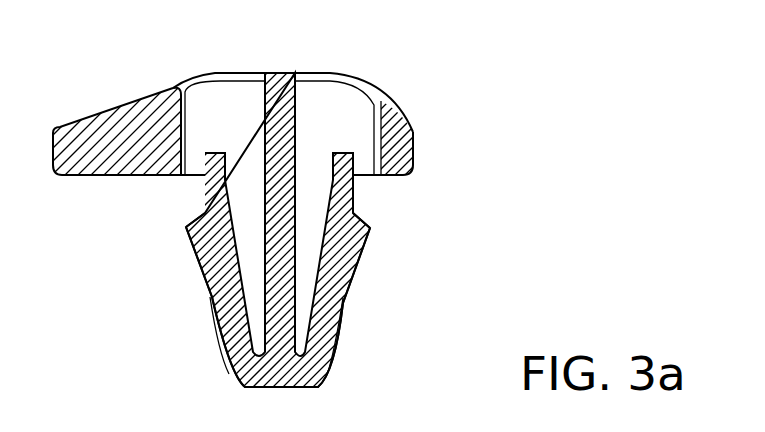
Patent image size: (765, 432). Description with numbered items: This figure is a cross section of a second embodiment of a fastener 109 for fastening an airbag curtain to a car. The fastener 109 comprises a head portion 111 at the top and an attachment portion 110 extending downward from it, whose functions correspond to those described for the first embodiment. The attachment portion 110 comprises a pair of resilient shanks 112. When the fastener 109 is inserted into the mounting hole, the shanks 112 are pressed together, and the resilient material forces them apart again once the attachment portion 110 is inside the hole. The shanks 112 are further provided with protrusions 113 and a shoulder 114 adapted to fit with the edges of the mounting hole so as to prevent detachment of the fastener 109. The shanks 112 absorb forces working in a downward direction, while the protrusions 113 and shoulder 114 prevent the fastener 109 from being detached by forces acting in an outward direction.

The fastener 109 is at (469, 113).
The attachment portion 110 is at (413, 302).
The head portion 111 is at (195, 54).
The resilient shanks 112 is at (213, 302).
The protrusions 113 is at (202, 238).
The shoulder 114 is at (172, 206).